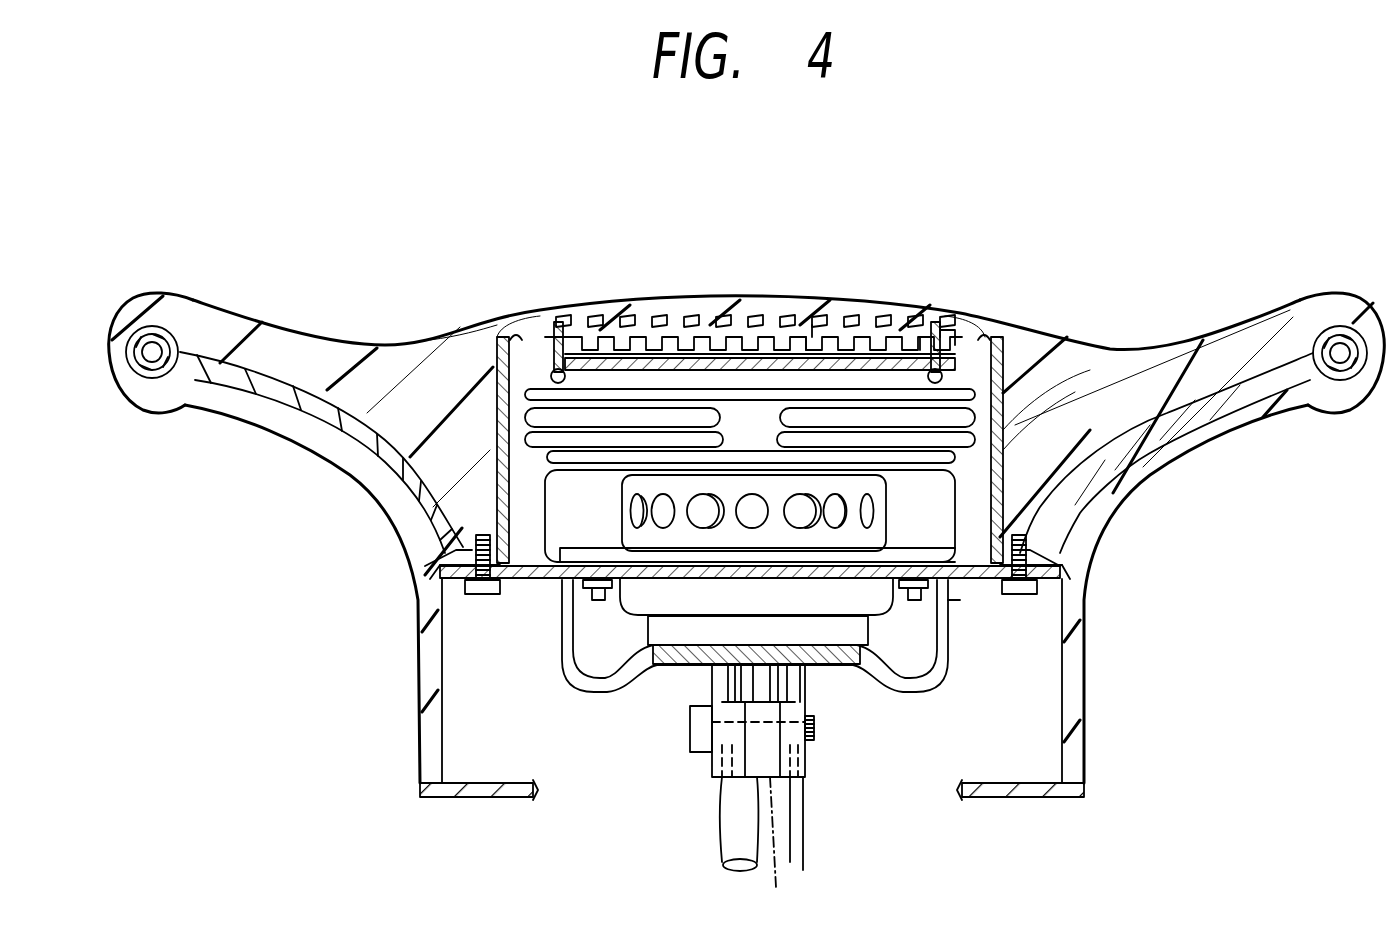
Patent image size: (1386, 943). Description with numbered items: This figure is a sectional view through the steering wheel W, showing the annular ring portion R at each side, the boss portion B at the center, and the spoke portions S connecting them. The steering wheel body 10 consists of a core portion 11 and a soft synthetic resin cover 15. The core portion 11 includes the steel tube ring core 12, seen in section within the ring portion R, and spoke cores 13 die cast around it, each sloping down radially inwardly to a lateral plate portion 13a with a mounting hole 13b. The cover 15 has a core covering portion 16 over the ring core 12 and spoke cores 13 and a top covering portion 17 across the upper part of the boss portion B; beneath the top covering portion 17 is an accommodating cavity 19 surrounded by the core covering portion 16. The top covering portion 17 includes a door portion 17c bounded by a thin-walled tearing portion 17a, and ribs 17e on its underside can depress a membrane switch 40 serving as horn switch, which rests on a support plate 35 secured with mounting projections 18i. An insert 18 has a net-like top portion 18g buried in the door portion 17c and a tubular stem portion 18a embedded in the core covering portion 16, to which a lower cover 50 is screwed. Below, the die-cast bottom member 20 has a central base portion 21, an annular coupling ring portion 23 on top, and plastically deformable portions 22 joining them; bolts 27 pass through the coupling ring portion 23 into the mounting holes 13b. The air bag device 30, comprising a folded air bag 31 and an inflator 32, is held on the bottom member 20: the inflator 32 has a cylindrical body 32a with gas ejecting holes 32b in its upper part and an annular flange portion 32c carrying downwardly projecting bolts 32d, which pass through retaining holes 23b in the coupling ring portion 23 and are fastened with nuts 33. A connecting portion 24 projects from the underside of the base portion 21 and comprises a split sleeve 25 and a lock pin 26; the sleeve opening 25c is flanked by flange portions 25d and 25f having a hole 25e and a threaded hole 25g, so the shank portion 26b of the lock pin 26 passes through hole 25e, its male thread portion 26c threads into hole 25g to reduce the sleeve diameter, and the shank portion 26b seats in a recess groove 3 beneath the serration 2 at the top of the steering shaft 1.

The steering shaft 1 is at (803, 871).
The serration 2 is at (767, 668).
The recess groove 3 is at (775, 847).
The steering wheel body 10 is at (373, 318).
The core portion 11 is at (291, 224).
The ring core 12 is at (155, 332).
The spoke core 13 is at (234, 376).
The lateral plate portion 13a is at (452, 554).
The mounting hole 13b is at (440, 567).
The cover portion 15 is at (540, 224).
The core covering portion 16 is at (432, 340).
The top covering portion 17 is at (553, 336).
The tearing portion 17a is at (966, 352).
The door portion 17c is at (733, 304).
The ribs 17e is at (640, 330).
The insert 18 is at (1011, 434).
The stem portion 18a is at (1039, 421).
The top portion 18g is at (806, 324).
The mounting projections 18i is at (941, 348).
The accommodating cavity 19 is at (512, 355).
The bottom member 20 is at (960, 708).
The central base portion 21 is at (845, 665).
The deformable portions 22 is at (565, 628).
The annular coupling ring portion 23 is at (1052, 582).
The retaining holes 23b is at (432, 586).
The connecting portion 24 is at (576, 702).
The split sleeve portion 25 is at (711, 688).
The opening 25c is at (795, 812).
The flange portion 25d is at (723, 791).
The hole 25e is at (716, 780).
The flange portion 25f is at (792, 766).
The threaded hole 25g is at (815, 765).
The lock pin 26 is at (700, 748).
The shank portion 26b is at (735, 845).
The male thread portion 26c is at (814, 730).
The bolts 27 is at (470, 600).
The air bag device 30 is at (1006, 372).
The air bag 31 is at (761, 389).
The inflator 32 is at (905, 497).
The cylindrical body 32a is at (949, 614).
The gas ejecting holes 32b is at (750, 514).
The flange portion 32c is at (756, 525).
The bolts 32d is at (588, 597).
The nuts 33 is at (608, 600).
The support plate 35 is at (700, 362).
The membrane switch 40 is at (658, 354).
The lower cover 50 is at (488, 798).
The annular ring portion R is at (124, 284).
The spoke portions S is at (250, 444).
The boss portion B is at (876, 290).
The steering wheel W is at (1225, 270).